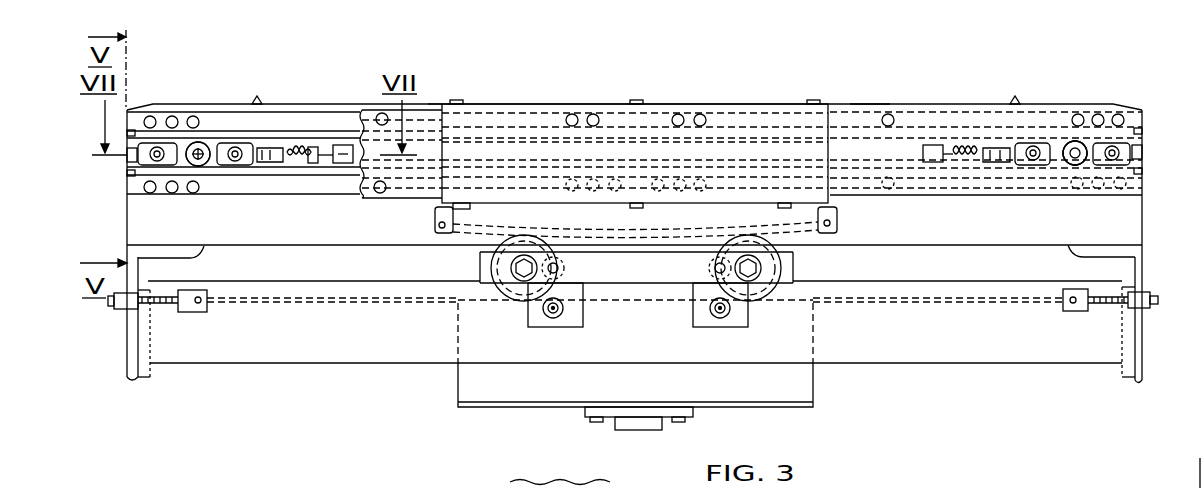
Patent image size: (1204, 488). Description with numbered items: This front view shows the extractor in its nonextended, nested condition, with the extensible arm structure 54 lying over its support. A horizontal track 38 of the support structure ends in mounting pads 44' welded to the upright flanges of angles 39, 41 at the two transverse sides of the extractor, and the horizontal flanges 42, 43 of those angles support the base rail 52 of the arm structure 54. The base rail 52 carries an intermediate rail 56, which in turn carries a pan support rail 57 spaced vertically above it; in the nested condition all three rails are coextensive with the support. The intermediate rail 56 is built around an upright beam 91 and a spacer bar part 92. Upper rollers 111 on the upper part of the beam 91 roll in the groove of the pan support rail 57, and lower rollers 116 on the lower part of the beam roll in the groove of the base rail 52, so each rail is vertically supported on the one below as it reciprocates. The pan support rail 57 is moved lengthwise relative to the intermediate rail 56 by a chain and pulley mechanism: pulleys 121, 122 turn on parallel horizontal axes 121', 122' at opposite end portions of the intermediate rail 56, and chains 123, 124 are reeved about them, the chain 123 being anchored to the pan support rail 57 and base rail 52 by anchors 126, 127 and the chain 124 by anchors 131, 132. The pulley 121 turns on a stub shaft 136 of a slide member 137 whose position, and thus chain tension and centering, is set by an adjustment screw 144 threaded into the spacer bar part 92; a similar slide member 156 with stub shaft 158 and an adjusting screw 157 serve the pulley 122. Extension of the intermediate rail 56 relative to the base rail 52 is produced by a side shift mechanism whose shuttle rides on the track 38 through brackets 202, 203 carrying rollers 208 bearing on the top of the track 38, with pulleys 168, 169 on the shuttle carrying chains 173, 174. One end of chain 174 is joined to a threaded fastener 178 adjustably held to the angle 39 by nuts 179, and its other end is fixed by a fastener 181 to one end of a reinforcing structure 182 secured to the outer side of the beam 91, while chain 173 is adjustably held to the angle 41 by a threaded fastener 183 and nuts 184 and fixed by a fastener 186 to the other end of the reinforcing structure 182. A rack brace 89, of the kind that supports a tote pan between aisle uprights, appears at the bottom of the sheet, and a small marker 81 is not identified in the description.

The track 38 is at (333, 280).
The angle 39 is at (127, 360).
The angle 41 is at (1143, 336).
The horizontal flange 42 is at (196, 252).
The horizontal flange 43 is at (1090, 258).
The mounting pad 44' is at (636, 349).
The base rail 52 is at (962, 276).
The arm structure 54 is at (928, 98).
The intermediate rail 56 is at (433, 200).
The pan support rail 57 is at (868, 104).
The position marker 81 is at (261, 97).
The longitudinal brace 89 is at (501, 487).
The beam 91 is at (430, 116).
The spacer bar part 92 is at (343, 150).
The upper roller 111 is at (193, 116).
The lower roller 116 is at (193, 194).
The pulley 121 is at (203, 184).
The axis 121' is at (213, 117).
The pulley 122 is at (1072, 185).
The axis 122' is at (1061, 116).
The chain 123 is at (133, 155).
The chain 124 is at (1143, 150).
The anchor 126 is at (1142, 131).
The anchor 127 is at (1142, 172).
The anchor 131 is at (128, 133).
The anchor 132 is at (130, 174).
The stub shaft 136 is at (198, 149).
The slide member 137 is at (252, 163).
The adjustment screw 144 is at (325, 158).
The slide member 156 is at (1064, 143).
The adjusting screw 157 is at (940, 145).
The stub shaft 158 is at (1066, 161).
The pulley 168 is at (520, 296).
The pulley 169 is at (762, 294).
The chain 173 is at (988, 304).
The chain 174 is at (350, 304).
The threaded fastener 178 is at (190, 313).
The nut 179 is at (140, 313).
The fastener 181 is at (440, 234).
The beam reinforcing structure 182 is at (757, 118).
The threaded fastener 183 is at (1074, 312).
The nut 184 is at (1130, 292).
The fastener 186 is at (838, 218).
The roller supporting bracket 202 is at (583, 326).
The roller supporting bracket 203 is at (700, 327).
The roller 208 is at (550, 318).